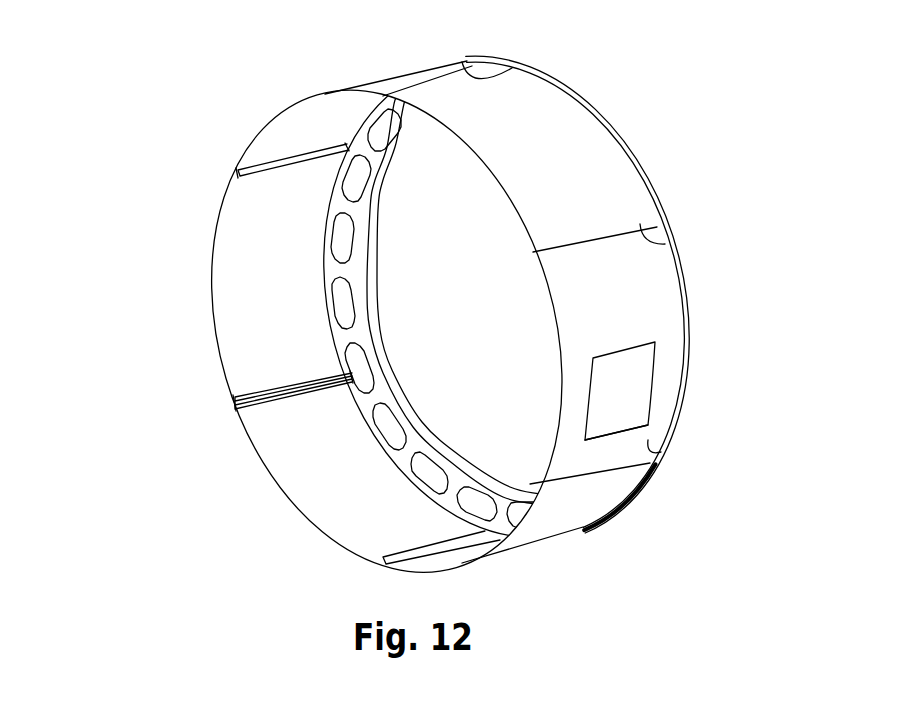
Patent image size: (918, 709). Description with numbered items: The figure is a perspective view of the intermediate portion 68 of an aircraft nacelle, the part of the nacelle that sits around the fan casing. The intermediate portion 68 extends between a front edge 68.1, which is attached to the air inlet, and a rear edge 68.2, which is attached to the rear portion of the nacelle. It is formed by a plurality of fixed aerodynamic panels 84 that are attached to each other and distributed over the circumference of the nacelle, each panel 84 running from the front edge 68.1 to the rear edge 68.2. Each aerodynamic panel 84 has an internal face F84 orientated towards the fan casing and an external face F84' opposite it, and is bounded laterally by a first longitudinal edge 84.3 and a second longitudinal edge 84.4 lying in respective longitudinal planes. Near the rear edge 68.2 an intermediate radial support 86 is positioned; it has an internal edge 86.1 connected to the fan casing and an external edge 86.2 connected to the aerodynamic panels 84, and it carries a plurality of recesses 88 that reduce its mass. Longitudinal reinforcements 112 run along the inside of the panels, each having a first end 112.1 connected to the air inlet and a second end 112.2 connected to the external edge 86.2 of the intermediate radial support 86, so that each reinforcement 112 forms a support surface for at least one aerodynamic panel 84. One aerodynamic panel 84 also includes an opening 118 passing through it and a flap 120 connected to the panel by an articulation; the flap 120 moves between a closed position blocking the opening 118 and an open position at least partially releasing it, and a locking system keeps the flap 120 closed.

The intermediate portion 68 is at (698, 201).
The front edge 68.1 is at (536, 318).
The rear edge 68.2 is at (678, 267).
The aerodynamic panel 84 is at (291, 116).
The first longitudinal edge 84.3 is at (487, 72).
The second longitudinal edge 84.4 is at (470, 57).
The internal face F84 is at (304, 544).
The external face F84' is at (709, 307).
The intermediate radial support 86 is at (384, 256).
The internal edge 86.1 is at (370, 225).
The external edge 86.2 is at (330, 293).
The recesses 88 is at (387, 422).
The longitudinal reinforcement 112 is at (247, 418).
The first end 112.1 is at (238, 172).
The second end 112.2 is at (347, 147).
The opening 118 is at (608, 435).
The flap 120 is at (650, 393).